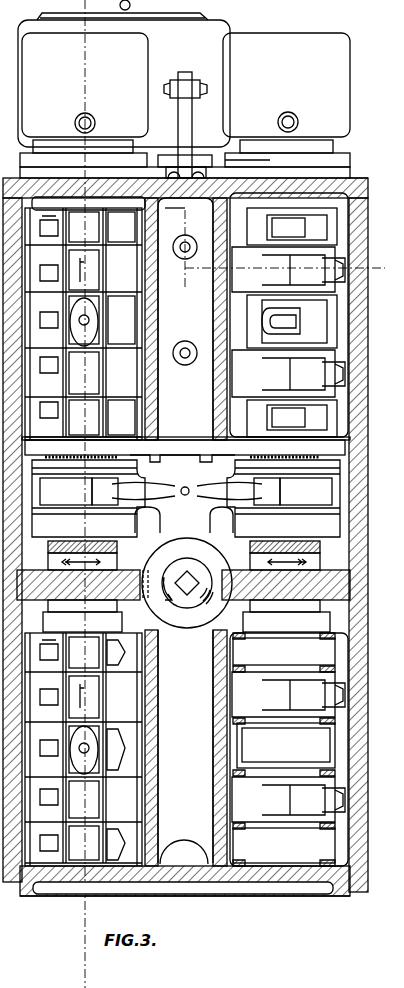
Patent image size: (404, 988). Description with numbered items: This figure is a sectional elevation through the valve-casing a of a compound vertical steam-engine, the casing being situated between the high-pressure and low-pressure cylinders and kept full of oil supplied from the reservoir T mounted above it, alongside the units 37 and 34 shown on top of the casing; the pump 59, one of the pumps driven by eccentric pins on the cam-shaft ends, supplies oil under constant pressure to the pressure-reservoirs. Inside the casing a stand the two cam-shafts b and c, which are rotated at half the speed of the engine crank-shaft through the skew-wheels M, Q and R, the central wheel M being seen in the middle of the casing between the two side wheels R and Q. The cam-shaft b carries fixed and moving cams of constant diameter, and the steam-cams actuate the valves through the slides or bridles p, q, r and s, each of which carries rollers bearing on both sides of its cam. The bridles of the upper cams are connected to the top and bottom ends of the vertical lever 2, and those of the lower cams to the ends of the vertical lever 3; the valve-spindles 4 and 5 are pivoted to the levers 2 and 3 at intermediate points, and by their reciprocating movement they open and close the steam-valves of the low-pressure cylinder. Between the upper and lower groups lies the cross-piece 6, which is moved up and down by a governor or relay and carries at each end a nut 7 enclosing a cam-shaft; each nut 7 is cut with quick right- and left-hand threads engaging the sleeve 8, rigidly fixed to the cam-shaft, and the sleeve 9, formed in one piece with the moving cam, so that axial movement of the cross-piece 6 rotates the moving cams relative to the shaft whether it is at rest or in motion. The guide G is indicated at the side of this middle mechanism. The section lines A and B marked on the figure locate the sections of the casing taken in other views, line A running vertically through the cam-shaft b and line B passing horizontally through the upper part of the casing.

The section line A A is at (79, 494).
The section line B B B B is at (275, 284).
The reservoir T is at (185, 106).
The left casing box 37 is at (124, 76).
The right casing box 34 is at (286, 93).
The pump 59 is at (307, 188).
The valve-casing a is at (356, 179).
The sleeve 8 is at (48, 549).
The bridle p is at (85, 318).
The vertical lever 2 is at (63, 296).
The valve-spindle 4 is at (84, 328).
The bridle q is at (84, 393).
The sleeve 9 is at (47, 468).
The middle frame G is at (350, 462).
The nut 7 is at (50, 486).
The cross-piece 6 is at (167, 507).
The skew-wheel M is at (186, 546).
The skew-wheel R is at (125, 567).
The skew-wheel Q is at (240, 575).
The cam-shaft b is at (60, 620).
The cam-shaft c is at (262, 620).
The bridle r is at (83, 749).
The vertical lever 3 is at (63, 718).
The valve-spindle 5 is at (84, 754).
The bridle s is at (84, 820).